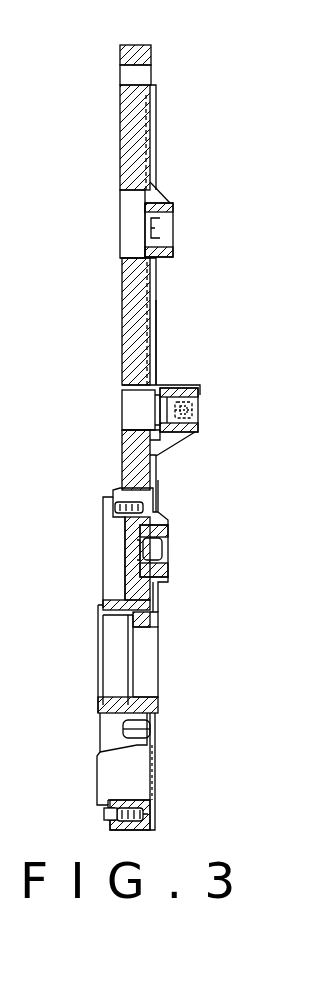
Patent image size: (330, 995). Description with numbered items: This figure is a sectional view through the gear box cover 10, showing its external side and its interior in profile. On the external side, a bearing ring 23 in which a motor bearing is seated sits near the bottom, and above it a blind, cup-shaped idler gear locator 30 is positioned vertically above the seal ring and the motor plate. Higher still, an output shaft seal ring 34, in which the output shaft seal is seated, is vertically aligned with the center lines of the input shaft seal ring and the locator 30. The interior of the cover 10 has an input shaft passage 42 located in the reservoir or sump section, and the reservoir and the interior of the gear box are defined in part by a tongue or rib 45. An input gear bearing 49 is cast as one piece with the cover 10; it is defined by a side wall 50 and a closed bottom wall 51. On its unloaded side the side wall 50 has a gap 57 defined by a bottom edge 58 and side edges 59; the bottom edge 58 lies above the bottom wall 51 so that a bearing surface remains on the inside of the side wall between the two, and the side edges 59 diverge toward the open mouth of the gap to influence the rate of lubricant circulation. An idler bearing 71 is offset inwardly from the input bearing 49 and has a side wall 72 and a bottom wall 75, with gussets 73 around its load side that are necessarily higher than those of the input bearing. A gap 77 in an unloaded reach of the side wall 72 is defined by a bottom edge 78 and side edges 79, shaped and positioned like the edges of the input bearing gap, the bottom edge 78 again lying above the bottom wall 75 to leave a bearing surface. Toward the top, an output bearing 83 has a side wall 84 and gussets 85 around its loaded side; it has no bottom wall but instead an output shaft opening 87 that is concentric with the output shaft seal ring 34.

The cover 10 is at (158, 288).
The bearing ring 23 is at (100, 618).
The idler gear locator 30 is at (122, 400).
The output shaft seal ring 34 is at (120, 200).
The input shaft passage 42 is at (138, 629).
The tongue or rib 45 is at (158, 335).
The input gear bearing 49 is at (154, 516).
The side wall 50 is at (168, 579).
The bottom wall 51 is at (139, 547).
The gap 57 is at (153, 547).
The bottom edge 58 is at (140, 557).
The side edges 59 is at (170, 536).
The idler bearing 71 is at (170, 387).
The side wall 72 is at (199, 392).
The gussets 73 is at (160, 384).
The bottom wall 75 is at (155, 418).
The gap 77 is at (196, 410).
The bottom edge 78 is at (196, 412).
The side edges 79 is at (196, 406).
The output bearing 83 is at (174, 194).
The side wall 84 is at (174, 217).
The gussets 85 is at (156, 193).
The output shaft opening 87 is at (152, 232).